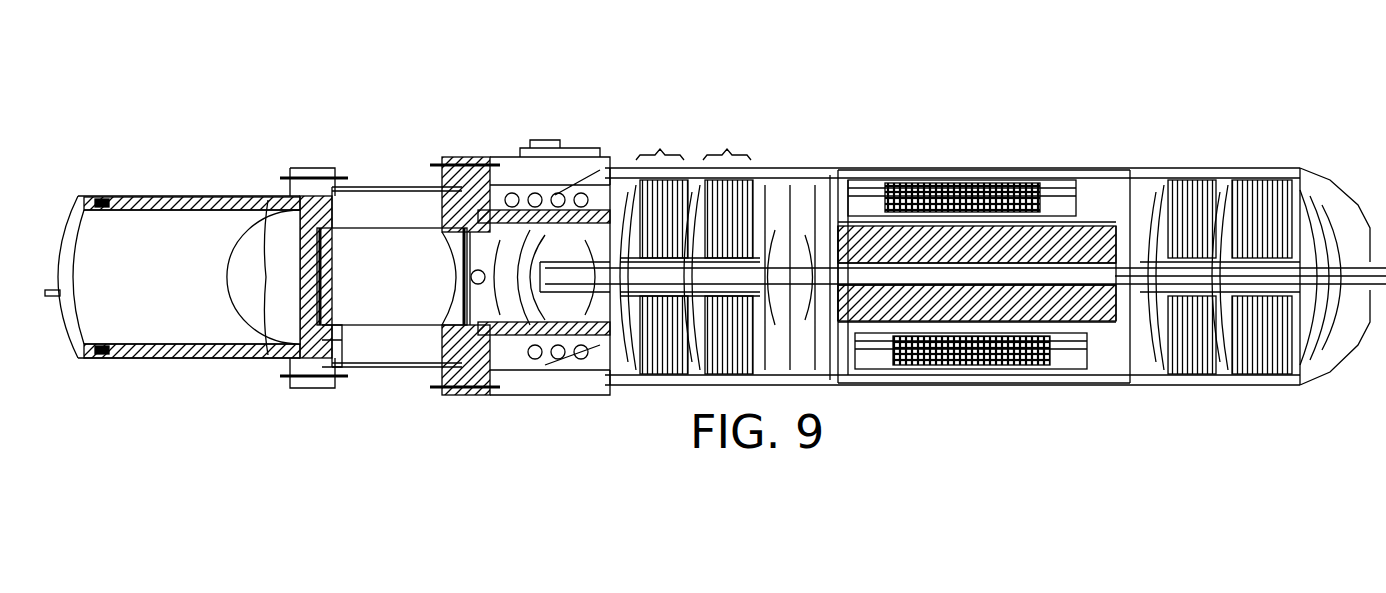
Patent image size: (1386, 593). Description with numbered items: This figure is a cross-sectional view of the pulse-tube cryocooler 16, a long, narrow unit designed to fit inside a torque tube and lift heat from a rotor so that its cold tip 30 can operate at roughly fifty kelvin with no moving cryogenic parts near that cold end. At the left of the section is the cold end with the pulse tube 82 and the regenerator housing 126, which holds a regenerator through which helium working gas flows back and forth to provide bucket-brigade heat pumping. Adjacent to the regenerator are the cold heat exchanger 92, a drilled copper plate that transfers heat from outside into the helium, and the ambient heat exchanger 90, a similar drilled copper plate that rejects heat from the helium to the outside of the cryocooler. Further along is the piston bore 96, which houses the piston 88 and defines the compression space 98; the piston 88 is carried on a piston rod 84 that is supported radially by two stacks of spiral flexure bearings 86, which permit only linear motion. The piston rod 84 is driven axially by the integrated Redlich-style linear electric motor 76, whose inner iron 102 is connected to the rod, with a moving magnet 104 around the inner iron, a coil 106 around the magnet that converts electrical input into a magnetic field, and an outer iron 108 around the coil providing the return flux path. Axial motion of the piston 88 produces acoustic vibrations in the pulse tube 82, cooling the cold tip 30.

The cryocooler 16 is at (473, 121).
The cold tip 30 is at (153, 305).
The linear electric motor 76 is at (981, 403).
The pulse tube 82 is at (378, 303).
The piston rod 84 is at (691, 170).
The flexure bearings 86 is at (1273, 330).
The piston 88 is at (540, 287).
The ambient heat exchanger 90 is at (445, 190).
The cold heat exchanger 92 is at (333, 340).
The piston bore 96 is at (522, 217).
The compression space 98 is at (512, 286).
The inner iron 102 is at (1070, 244).
The moving magnet 104 is at (1025, 225).
The coil 106 is at (960, 200).
The outer iron 108 is at (872, 205).
The regenerator housing 126 is at (380, 207).